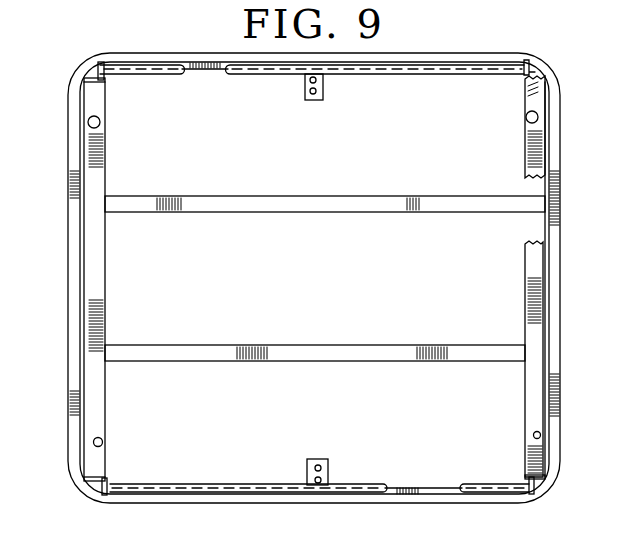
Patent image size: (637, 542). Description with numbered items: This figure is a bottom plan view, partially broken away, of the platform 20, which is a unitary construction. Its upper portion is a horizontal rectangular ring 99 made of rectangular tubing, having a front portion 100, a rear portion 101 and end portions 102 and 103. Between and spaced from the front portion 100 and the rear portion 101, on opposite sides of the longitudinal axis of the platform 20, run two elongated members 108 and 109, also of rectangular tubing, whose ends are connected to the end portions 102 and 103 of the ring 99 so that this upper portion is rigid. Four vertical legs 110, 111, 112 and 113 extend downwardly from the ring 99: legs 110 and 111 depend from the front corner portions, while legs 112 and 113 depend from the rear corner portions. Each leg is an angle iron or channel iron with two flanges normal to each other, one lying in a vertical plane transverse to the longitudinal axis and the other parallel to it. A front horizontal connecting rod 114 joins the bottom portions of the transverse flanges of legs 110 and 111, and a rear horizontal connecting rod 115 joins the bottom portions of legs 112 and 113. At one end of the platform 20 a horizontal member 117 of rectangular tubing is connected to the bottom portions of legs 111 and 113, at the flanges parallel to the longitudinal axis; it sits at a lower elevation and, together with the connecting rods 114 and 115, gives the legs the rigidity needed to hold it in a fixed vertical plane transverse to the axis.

The platform 20 is at (71, 49).
The horizontal rectangular ring 99 is at (58, 321).
The front portion 100 is at (173, 60).
The rear portion 101 is at (240, 504).
The end portion 102 is at (68, 288).
The end portion 103 is at (561, 276).
The elongated member 108 is at (205, 345).
The elongated member 109 is at (218, 196).
The vertical leg 110 is at (106, 75).
The vertical leg 111 is at (524, 75).
The vertical leg 112 is at (110, 484).
The vertical leg 113 is at (529, 480).
The front horizontal connecting rod 114 is at (365, 76).
The rear horizontal connecting rod 115 is at (368, 484).
The horizontal member 117 is at (525, 292).